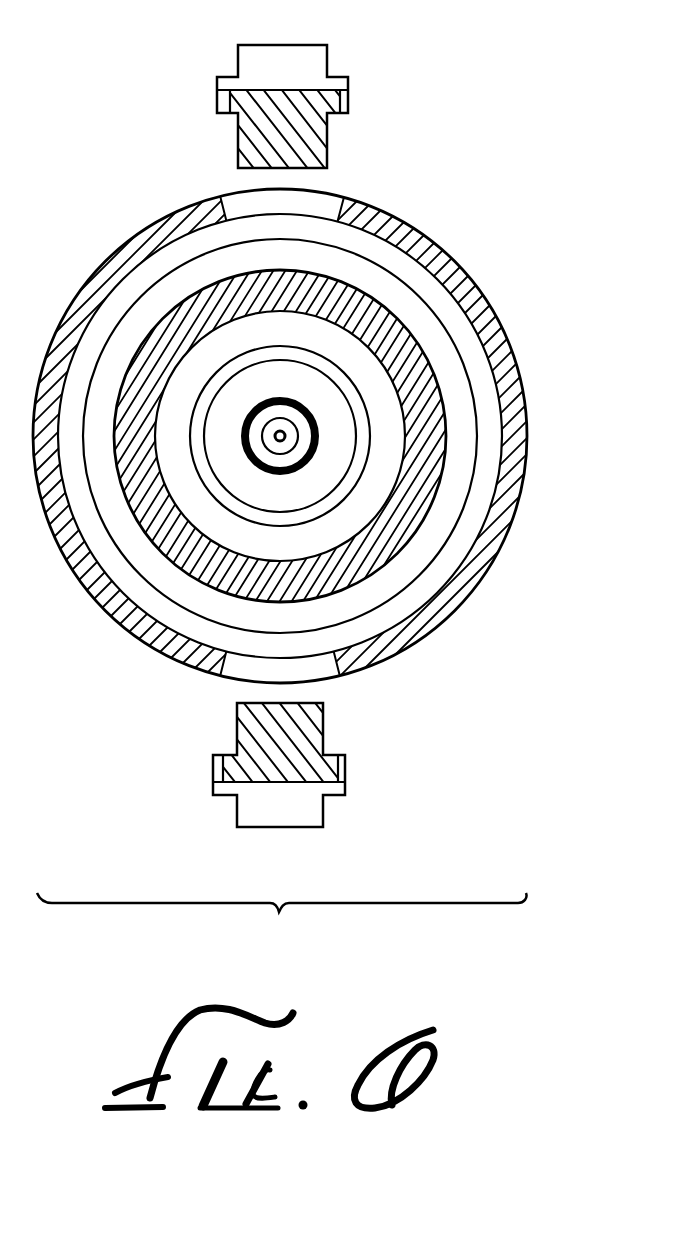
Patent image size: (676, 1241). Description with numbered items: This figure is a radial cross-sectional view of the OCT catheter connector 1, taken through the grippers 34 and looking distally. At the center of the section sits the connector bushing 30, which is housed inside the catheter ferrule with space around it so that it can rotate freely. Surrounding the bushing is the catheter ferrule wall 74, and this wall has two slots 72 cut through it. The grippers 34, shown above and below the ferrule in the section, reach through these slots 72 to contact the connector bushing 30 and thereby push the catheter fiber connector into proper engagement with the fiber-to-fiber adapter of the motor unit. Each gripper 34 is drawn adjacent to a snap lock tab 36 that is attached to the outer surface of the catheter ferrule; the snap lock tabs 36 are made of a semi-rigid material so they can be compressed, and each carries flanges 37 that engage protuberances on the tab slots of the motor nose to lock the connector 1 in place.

The OCT catheter connector 1 is at (282, 653).
The connector bushing 30 is at (330, 268).
The grippers 34 is at (248, 146).
The snap lock tabs 36 is at (348, 98).
The flanges 37 is at (217, 107).
The slots 72 is at (248, 196).
The catheter ferrule wall 74 is at (305, 188).